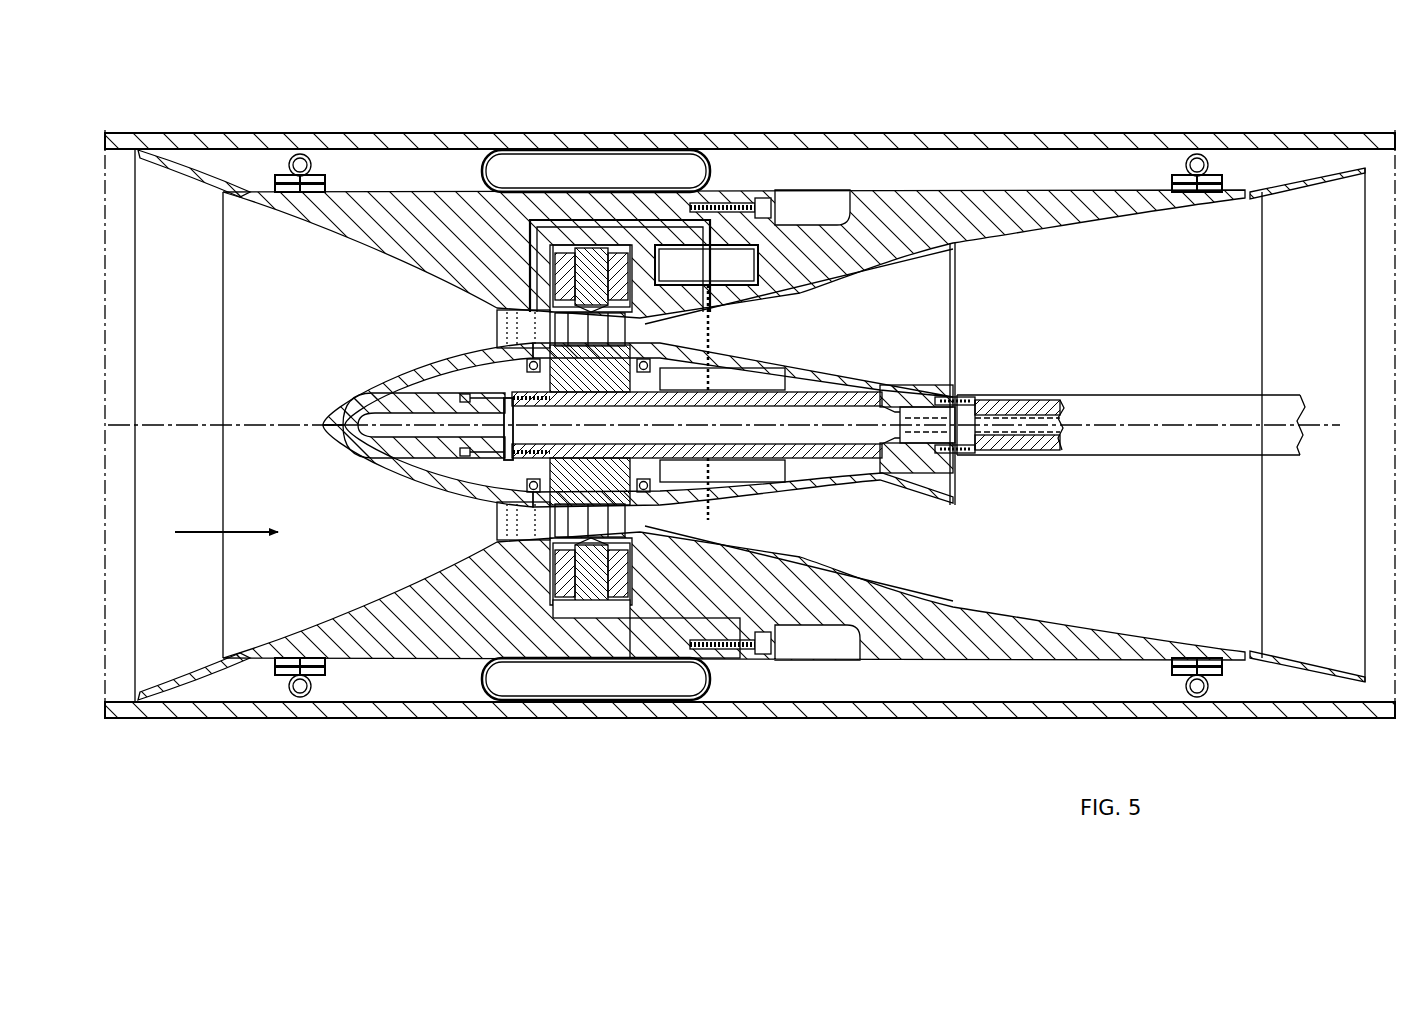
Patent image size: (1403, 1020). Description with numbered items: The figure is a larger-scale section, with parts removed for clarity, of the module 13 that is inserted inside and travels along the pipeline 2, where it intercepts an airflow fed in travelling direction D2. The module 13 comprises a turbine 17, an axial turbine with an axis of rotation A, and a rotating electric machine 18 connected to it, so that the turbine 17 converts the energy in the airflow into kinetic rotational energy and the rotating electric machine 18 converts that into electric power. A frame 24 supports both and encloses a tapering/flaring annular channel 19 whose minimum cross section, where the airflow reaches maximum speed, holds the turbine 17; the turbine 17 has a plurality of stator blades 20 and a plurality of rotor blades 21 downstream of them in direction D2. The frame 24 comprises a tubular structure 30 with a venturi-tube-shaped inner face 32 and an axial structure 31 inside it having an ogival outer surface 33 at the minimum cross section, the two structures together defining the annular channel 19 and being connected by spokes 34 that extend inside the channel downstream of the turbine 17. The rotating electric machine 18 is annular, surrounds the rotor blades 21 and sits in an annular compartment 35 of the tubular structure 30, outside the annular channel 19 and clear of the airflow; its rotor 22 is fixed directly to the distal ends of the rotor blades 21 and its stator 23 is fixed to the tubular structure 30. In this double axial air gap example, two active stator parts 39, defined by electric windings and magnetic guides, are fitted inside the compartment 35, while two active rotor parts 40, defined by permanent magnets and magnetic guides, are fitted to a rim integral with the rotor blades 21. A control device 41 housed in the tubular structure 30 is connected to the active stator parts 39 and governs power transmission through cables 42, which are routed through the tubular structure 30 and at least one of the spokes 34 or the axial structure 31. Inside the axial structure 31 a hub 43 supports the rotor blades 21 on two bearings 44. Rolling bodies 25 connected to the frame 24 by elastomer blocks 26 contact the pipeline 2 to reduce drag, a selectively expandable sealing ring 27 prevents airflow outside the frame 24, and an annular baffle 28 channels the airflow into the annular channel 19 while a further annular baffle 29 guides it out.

The pipeline 2 is at (205, 133).
The module 13 is at (734, 355).
The turbine 17 is at (478, 322).
The rotating electric machine 18 is at (530, 285).
The annular channel 19 is at (468, 533).
The stator blades 20 is at (518, 342).
The rotor blades 21 is at (630, 330).
The rotor 22 is at (602, 610).
The stator 23 is at (616, 610).
The frame 24 is at (982, 182).
The rolling bodies 25 is at (322, 160).
The elastomer blocks 26 is at (270, 175).
The selectively expandable sealing ring 27 is at (718, 160).
The annular baffle 28 is at (205, 185).
The further annular baffle 29 is at (1290, 198).
The tubular structure 30 is at (905, 205).
The axial structure 31 is at (925, 392).
The inner face 32 is at (912, 262).
The ogival outer surface 33 is at (895, 365).
The spokes 34 is at (920, 300).
The annular compartment 35 is at (594, 612).
The active stator parts 39 is at (548, 582).
The active rotor parts 40 is at (695, 660).
The control device 41 is at (750, 255).
The cables 42 is at (632, 228).
The hub 43 is at (665, 462).
The bearings 44 is at (518, 476).
The axis of rotation A is at (276, 422).
The travelling direction D2 is at (226, 505).